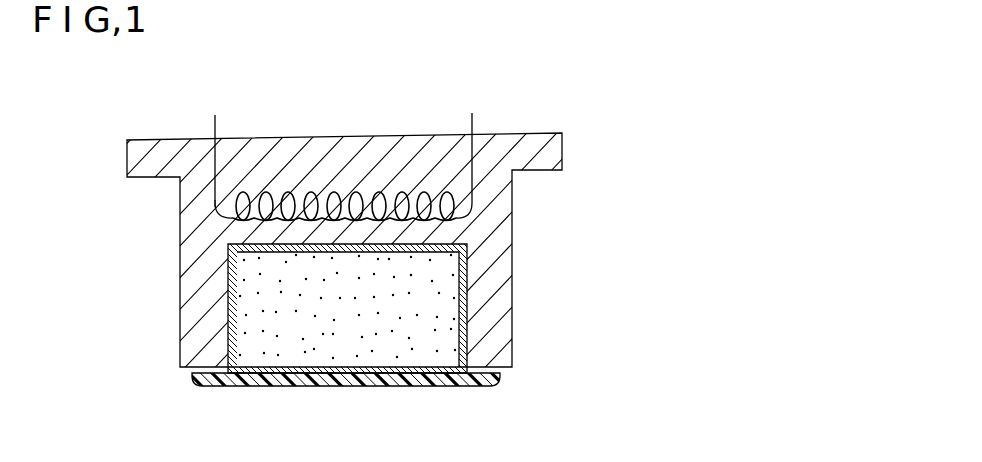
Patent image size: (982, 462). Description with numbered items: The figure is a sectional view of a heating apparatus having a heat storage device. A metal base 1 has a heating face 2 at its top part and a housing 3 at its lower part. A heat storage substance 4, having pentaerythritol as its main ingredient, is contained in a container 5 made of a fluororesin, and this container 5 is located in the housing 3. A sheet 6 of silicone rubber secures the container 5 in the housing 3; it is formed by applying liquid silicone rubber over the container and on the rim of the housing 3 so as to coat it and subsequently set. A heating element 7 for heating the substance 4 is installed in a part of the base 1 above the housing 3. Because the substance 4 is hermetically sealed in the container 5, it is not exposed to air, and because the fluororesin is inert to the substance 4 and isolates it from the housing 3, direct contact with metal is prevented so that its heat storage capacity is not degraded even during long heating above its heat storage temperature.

The metal base 1 is at (537, 166).
The heating face 2 is at (364, 137).
The housing 3 is at (489, 263).
The heat storage substance 4 is at (430, 322).
The container 5 is at (257, 367).
The sheet 6 is at (366, 387).
The heating element 7 is at (222, 207).